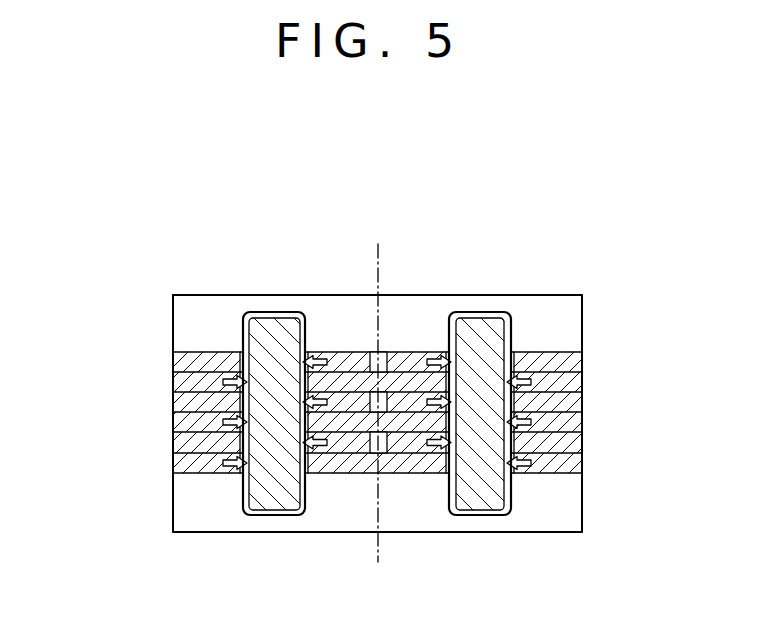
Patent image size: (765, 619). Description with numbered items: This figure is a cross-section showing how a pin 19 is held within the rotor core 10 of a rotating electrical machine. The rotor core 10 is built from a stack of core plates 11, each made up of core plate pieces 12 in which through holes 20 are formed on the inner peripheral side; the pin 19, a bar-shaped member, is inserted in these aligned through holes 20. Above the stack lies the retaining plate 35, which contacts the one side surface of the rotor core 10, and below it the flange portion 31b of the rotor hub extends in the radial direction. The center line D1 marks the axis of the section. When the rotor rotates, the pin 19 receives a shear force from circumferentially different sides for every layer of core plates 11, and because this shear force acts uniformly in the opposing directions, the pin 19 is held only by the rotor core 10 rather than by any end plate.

The rotor core 10 is at (538, 350).
The core plate 11 is at (371, 412).
The core plate piece 12 is at (178, 362).
The pin 19 is at (285, 325).
The through hole 20 is at (262, 334).
The retaining plate 35 is at (207, 307).
The flange portion 31b is at (196, 520).
The center axis D1 is at (382, 391).